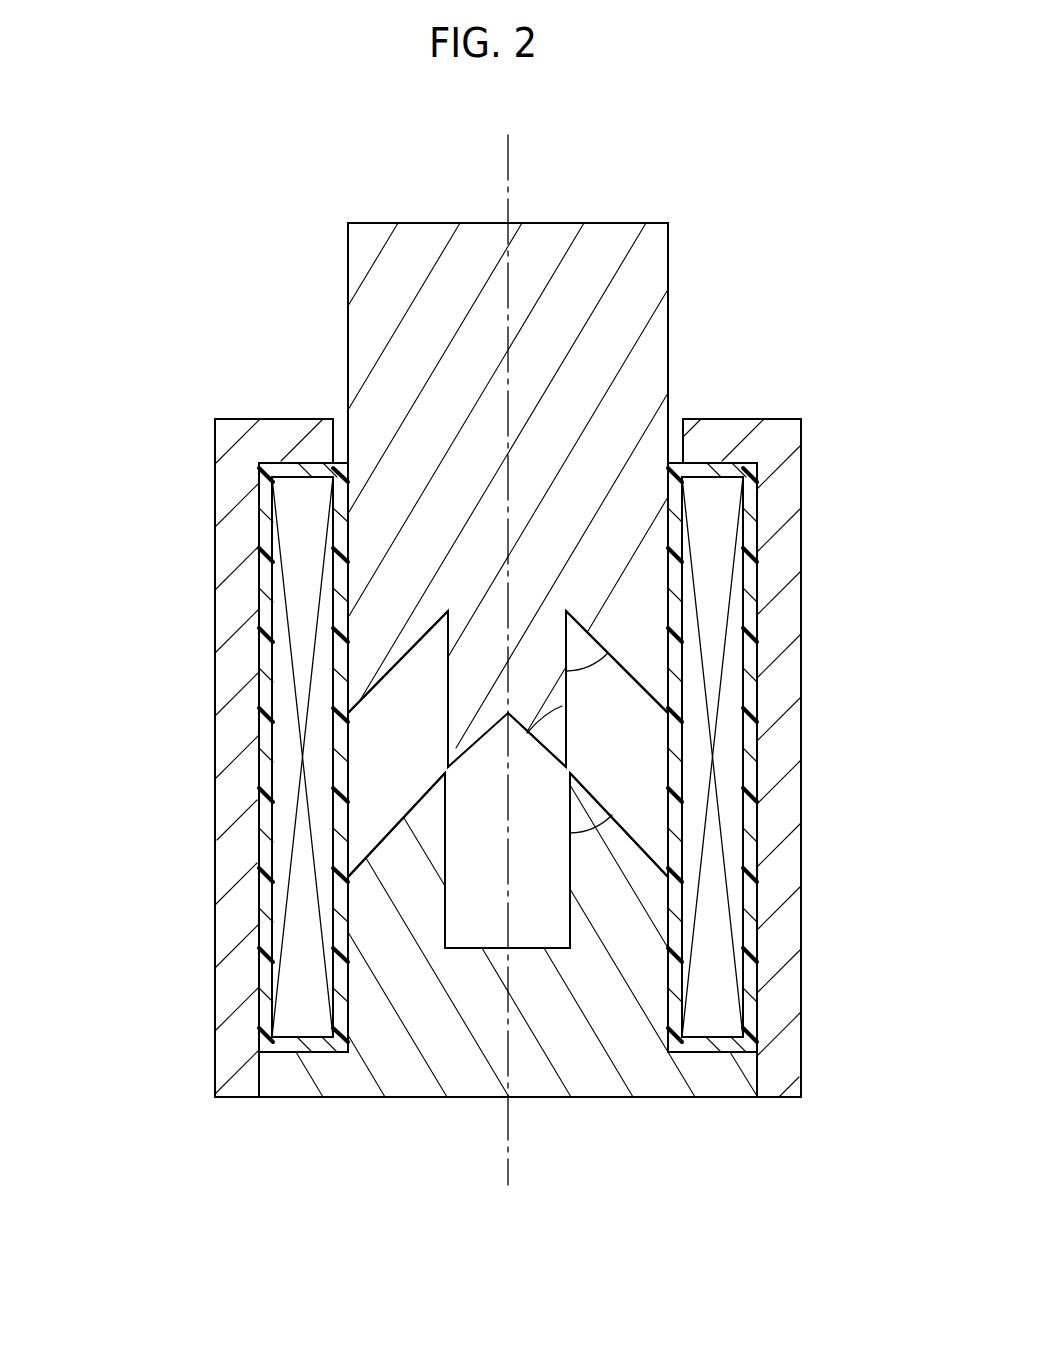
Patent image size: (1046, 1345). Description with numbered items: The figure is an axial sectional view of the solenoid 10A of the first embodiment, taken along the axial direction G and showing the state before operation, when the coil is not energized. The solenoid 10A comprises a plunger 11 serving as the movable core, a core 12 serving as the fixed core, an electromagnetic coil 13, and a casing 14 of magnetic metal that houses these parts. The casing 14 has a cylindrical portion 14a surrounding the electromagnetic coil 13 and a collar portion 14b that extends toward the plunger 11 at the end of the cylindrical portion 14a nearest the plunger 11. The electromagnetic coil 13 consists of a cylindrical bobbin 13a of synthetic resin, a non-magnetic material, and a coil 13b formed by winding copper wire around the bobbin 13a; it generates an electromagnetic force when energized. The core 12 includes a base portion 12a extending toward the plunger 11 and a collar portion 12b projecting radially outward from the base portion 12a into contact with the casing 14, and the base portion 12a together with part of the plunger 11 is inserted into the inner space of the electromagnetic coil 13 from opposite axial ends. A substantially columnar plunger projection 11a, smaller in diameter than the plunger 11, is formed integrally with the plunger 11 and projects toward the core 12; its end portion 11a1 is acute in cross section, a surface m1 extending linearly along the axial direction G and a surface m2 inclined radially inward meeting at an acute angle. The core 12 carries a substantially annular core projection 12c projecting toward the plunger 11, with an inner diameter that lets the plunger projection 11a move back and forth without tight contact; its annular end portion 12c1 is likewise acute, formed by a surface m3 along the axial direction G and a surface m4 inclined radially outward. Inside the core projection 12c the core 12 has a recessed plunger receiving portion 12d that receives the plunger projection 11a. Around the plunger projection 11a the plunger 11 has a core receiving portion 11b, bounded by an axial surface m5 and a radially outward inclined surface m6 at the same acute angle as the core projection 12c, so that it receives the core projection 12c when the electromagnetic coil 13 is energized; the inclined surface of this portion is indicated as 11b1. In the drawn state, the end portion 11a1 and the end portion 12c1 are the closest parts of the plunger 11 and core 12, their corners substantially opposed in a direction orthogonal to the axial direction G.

The solenoid 10A is at (728, 147).
The axial direction G is at (508, 178).
The plunger 11 is at (668, 315).
The plunger projection 11a is at (537, 643).
The end portion of the plunger projection 11a1 is at (566, 752).
The core receiving portion 11b is at (403, 731).
The inclined surface of protruding portion 11b1 is at (427, 648).
The core 12 is at (657, 1097).
The base portion 12a is at (418, 1000).
The collar portion 12b is at (294, 1080).
The core projection 12c is at (410, 888).
The end portion of the core projection 12c1 is at (440, 783).
The plunger receiving portion 12d is at (537, 925).
The electromagnetic coil 13 is at (563, 757).
The bobbin 13a is at (752, 980).
The coil 13b is at (720, 995).
The casing 14 is at (803, 470).
The cylindrical portion 14a is at (770, 543).
The collar portion 14b is at (718, 437).
The surface m1 is at (566, 733).
The surface m2 is at (541, 746).
The surface m3 is at (568, 822).
The surface m4 is at (621, 822).
The surface m5 is at (567, 649).
The surface m6 is at (640, 686).